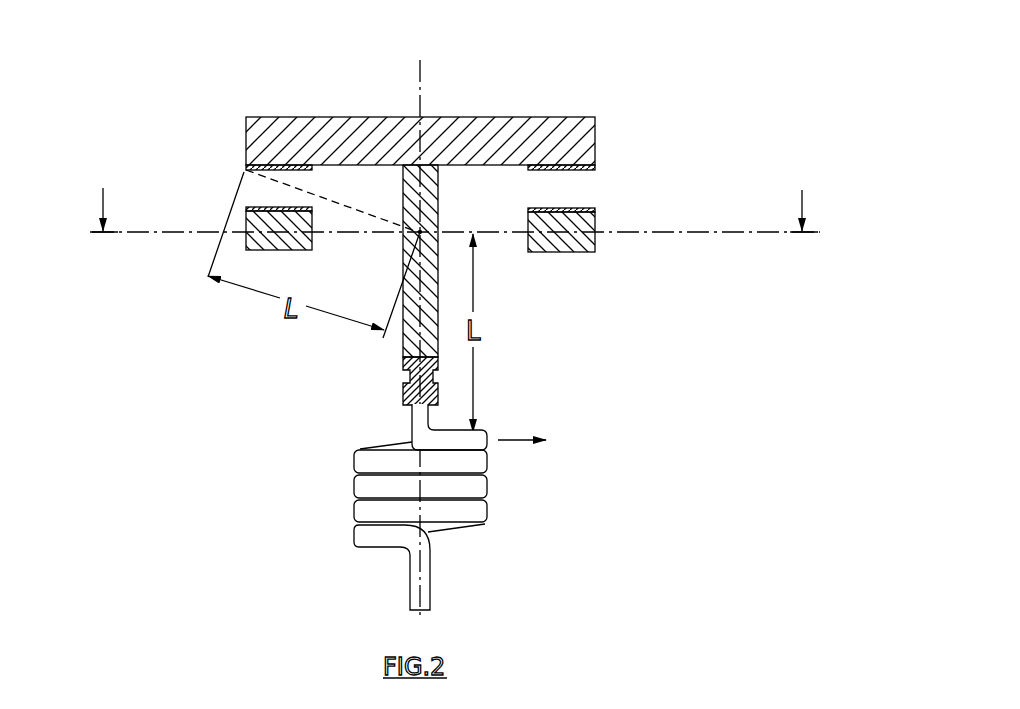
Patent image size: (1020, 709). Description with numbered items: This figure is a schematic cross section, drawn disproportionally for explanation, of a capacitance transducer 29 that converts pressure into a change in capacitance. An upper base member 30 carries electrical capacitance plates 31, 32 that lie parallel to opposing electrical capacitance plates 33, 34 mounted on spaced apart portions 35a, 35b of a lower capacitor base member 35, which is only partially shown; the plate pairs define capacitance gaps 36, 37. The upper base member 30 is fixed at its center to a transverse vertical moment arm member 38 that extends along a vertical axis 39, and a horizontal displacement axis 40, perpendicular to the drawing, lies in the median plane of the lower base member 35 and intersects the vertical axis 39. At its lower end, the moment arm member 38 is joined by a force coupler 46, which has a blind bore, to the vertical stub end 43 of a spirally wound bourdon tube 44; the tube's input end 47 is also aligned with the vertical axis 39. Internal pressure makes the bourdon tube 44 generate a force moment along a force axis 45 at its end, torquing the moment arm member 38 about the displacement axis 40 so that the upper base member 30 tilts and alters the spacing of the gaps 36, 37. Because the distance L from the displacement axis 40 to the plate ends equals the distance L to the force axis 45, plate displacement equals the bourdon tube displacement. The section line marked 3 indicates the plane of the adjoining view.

The section line 3- 3 is at (454, 194).
The capacitance transducer 29 is at (690, 193).
The upper base member 30 is at (597, 137).
The electrical capacitance plate 31 is at (297, 170).
The electrical capacitance plate 32 is at (563, 175).
The electrical capacitance plate 33 is at (272, 207).
The electrical capacitance plate 34 is at (591, 208).
The lower capacitor base member 35 is at (598, 242).
The spaced apart portion 35a is at (278, 248).
The spaced apart portion 35b is at (566, 254).
The capacitance gap 36 is at (243, 185).
The capacitance gap 37 is at (577, 191).
The moment arm member 38 is at (441, 208).
The vertical axis 39 is at (422, 75).
The displacement axis 40 is at (416, 233).
The stub end 43 is at (412, 428).
The bourdon tube 44 is at (492, 490).
The force axis 45 is at (505, 432).
The force coupler 46 is at (438, 376).
The input end 47 is at (431, 593).